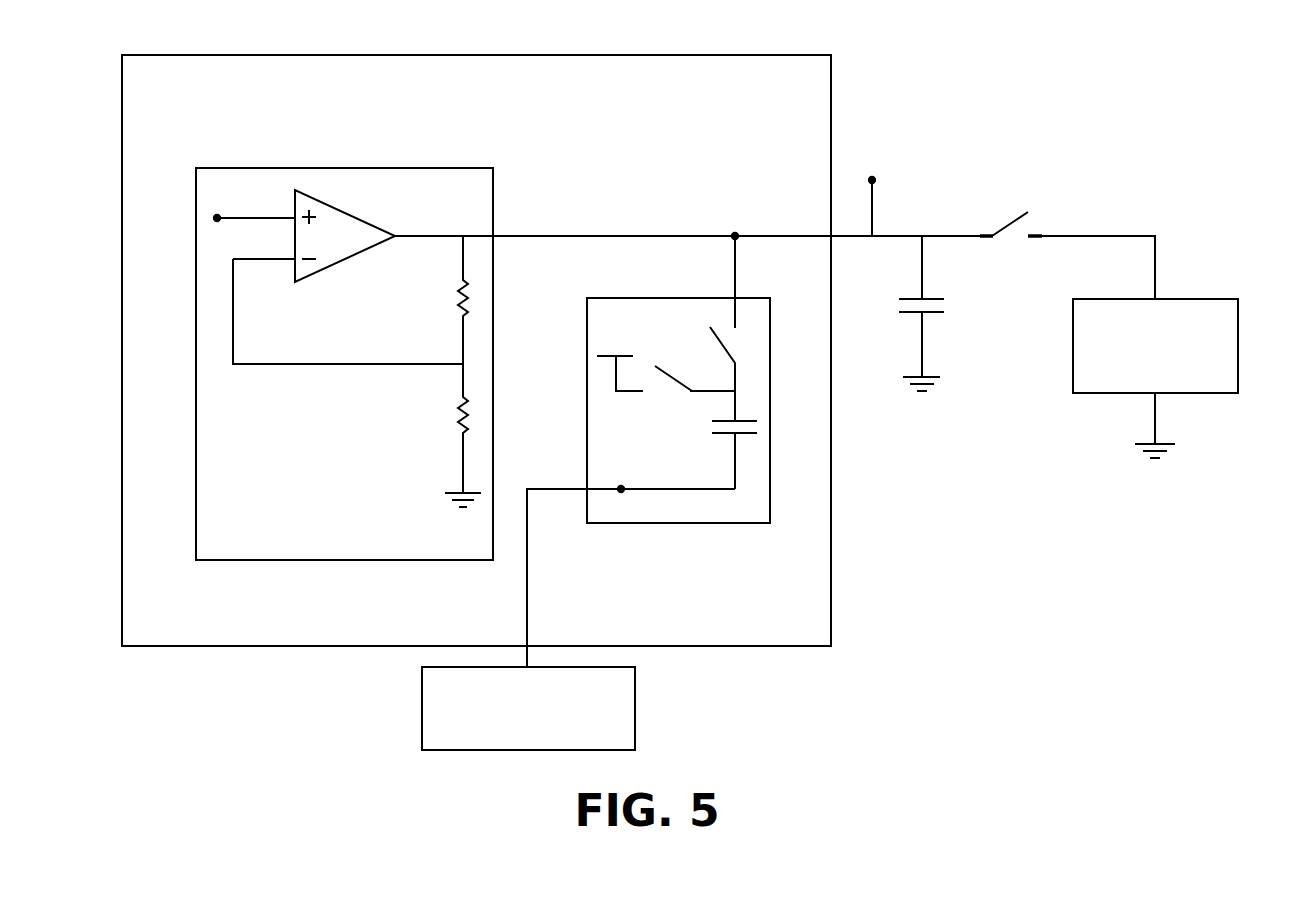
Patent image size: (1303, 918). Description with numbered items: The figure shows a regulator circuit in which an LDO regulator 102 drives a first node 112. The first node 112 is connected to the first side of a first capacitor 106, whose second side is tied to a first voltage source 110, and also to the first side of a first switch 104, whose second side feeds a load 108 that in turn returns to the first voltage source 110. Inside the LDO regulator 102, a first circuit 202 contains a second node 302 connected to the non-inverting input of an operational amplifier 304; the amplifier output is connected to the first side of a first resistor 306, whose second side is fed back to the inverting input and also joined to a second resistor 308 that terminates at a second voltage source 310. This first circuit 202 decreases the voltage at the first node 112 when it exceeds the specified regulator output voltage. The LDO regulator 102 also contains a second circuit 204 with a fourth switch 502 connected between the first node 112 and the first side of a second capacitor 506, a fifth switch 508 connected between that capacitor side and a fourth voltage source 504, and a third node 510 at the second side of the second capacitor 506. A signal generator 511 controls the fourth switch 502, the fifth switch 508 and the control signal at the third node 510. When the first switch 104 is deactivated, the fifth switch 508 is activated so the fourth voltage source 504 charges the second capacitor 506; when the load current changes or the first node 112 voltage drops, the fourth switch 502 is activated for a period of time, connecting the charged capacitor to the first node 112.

The LDO regulator 102 is at (293, 55).
The first circuit 202 is at (367, 168).
The second node 302 is at (217, 218).
The operational amplifier 304 is at (337, 264).
The first resistor 306 is at (470, 296).
The second resistor 308 is at (470, 410).
The second voltage source 310 is at (465, 510).
The second circuit 204 is at (723, 523).
The fourth switch 502 is at (727, 347).
The fourth voltage source 504 is at (612, 353).
The second capacitor 506 is at (745, 417).
The fifth switch 508 is at (675, 385).
The third node 510 is at (621, 488).
The signal generator 511 is at (635, 707).
The first node 112 is at (872, 180).
The first switch 104 is at (1008, 223).
The first capacitor 106 is at (943, 295).
The first voltage source 110 is at (920, 390).
The load 108 is at (1182, 299).